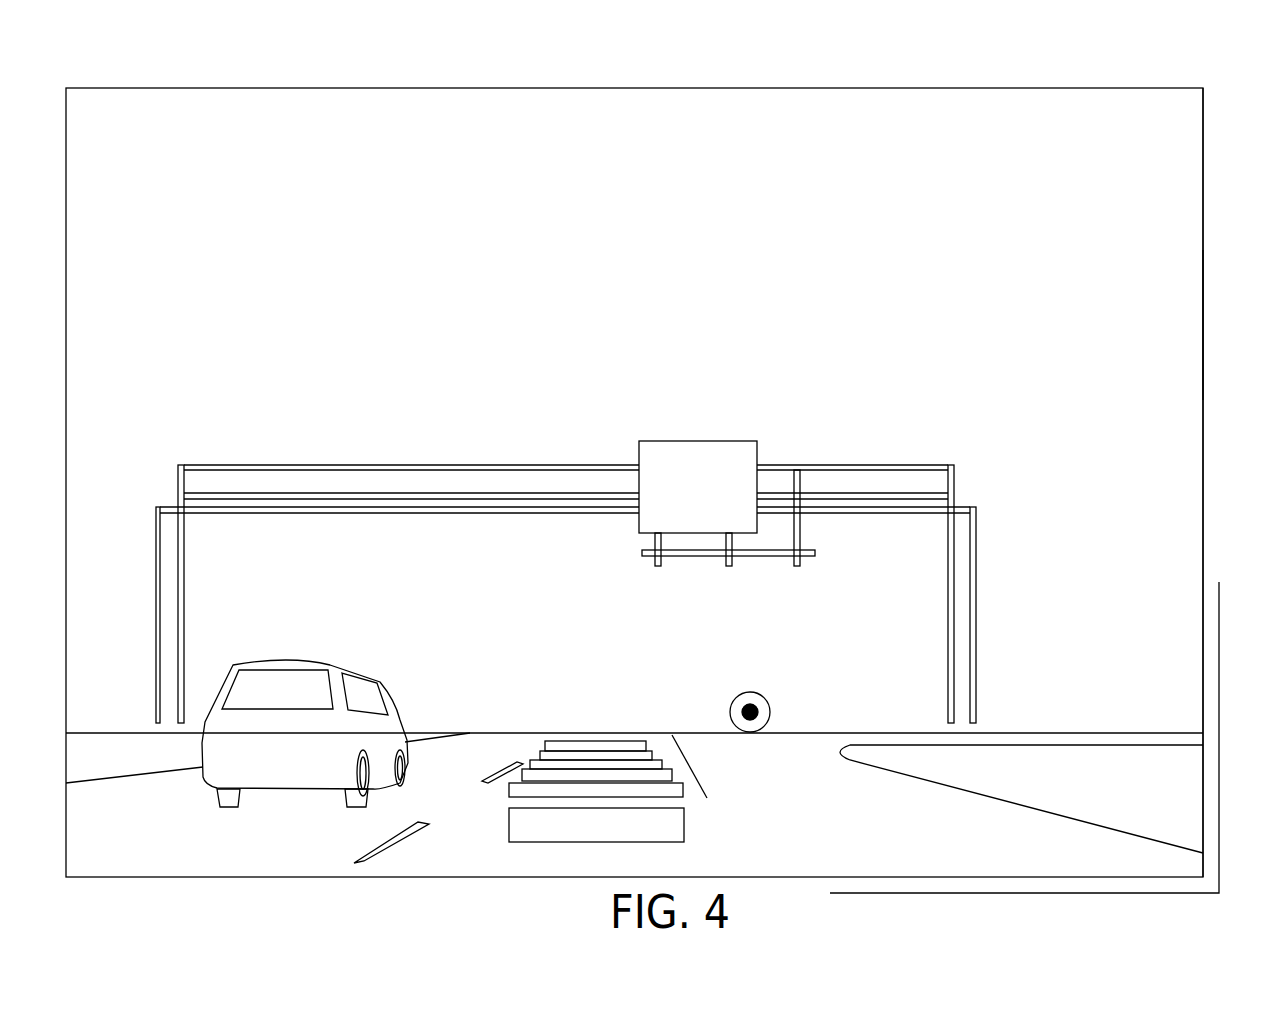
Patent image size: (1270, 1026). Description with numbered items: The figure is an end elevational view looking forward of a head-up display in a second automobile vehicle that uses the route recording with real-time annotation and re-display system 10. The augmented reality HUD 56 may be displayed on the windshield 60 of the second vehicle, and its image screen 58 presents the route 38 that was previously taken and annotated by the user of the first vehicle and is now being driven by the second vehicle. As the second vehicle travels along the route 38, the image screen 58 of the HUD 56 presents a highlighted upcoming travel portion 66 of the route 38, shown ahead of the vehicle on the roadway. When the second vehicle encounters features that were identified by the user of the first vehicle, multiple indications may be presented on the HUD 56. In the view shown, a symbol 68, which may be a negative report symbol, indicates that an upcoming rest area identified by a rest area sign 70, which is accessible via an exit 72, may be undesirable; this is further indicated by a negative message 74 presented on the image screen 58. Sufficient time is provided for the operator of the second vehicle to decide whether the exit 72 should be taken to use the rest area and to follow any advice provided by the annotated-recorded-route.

The route recording with real-time annotation and re-display system 10 is at (1076, 76).
The augmented reality HUD 56 is at (1212, 135).
The image screen 58 is at (1186, 315).
The windshield 60 is at (1212, 796).
The route 38 is at (467, 858).
The rest area sign 70 is at (705, 455).
The highlighted upcoming travel portion 66 is at (572, 770).
The exit 72 is at (710, 752).
The symbol 68 is at (760, 710).
The negative message 74 is at (560, 832).